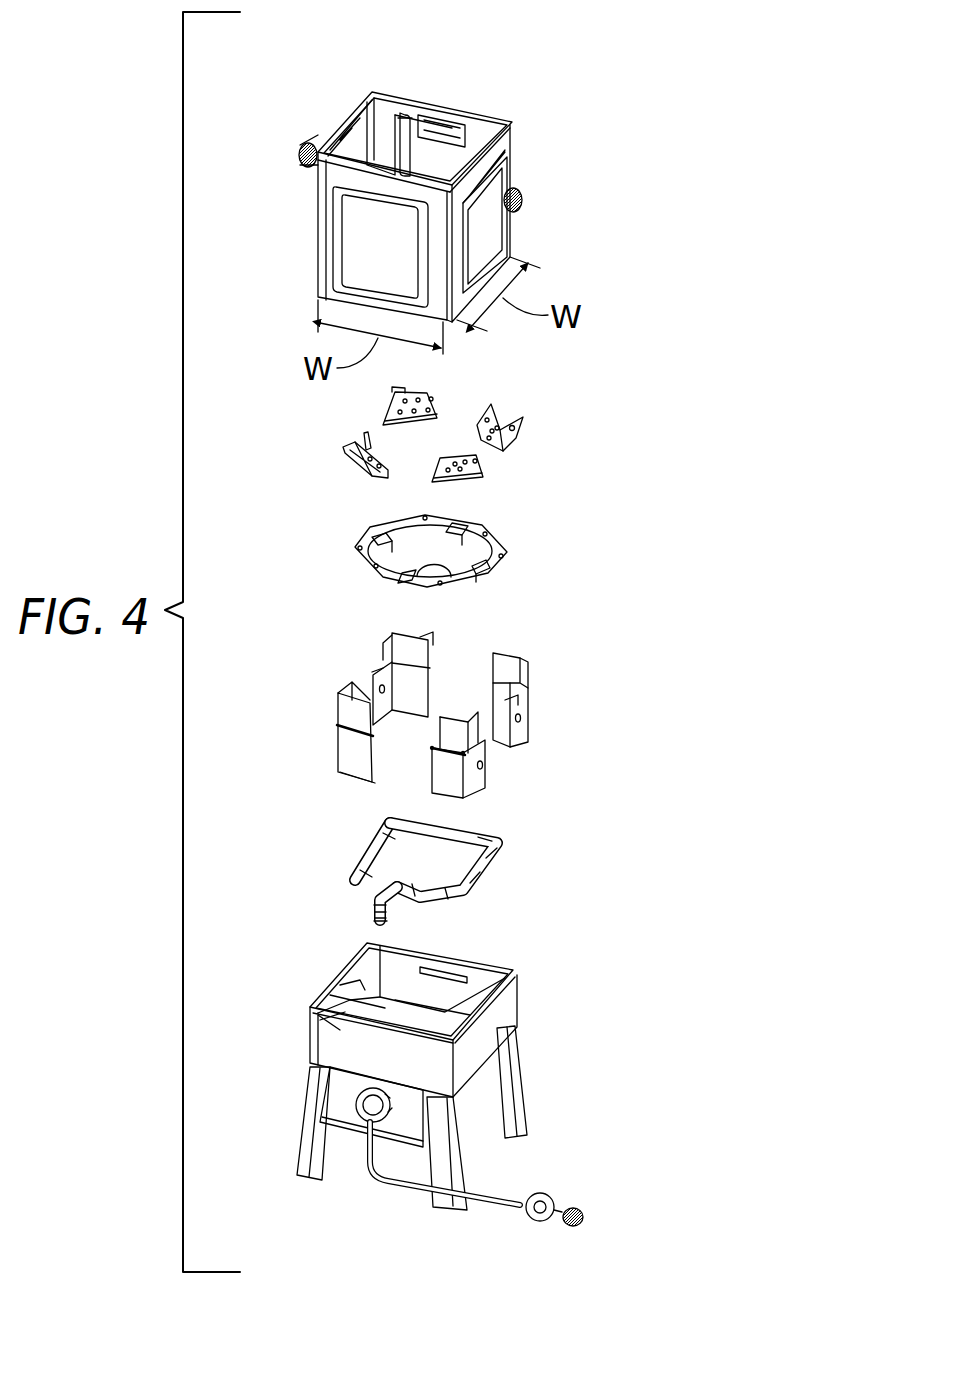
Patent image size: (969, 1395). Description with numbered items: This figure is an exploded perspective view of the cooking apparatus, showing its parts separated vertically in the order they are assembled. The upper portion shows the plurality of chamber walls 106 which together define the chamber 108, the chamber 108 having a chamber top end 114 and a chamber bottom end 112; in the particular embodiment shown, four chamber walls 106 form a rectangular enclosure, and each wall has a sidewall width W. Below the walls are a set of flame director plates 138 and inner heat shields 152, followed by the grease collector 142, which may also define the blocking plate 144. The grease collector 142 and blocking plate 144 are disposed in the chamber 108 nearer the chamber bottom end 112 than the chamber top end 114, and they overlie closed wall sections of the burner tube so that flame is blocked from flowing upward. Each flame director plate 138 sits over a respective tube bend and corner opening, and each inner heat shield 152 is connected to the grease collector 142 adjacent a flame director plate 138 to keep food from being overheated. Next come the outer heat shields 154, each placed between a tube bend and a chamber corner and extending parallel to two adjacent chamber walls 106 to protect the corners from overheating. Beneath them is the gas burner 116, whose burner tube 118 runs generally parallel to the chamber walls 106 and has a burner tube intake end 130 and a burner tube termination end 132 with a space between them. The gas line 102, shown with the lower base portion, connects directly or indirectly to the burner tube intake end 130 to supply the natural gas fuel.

The gas line 102 is at (420, 1182).
The chamber wall 106 is at (472, 146).
The chamber 108 is at (429, 155).
The chamber bottom end 112 is at (461, 1030).
The chamber top end 114 is at (396, 90).
The gas burner 116 is at (435, 877).
The burner tube 118 is at (378, 892).
The burner tube intake end 130 is at (384, 922).
The burner tube termination end 132 is at (374, 872).
The flame director plate 138 is at (513, 438).
The grease collector 142 is at (491, 549).
The blocking plate 144 is at (470, 547).
The inner heat shield 152 is at (478, 407).
The outer heat shield 154 is at (348, 750).